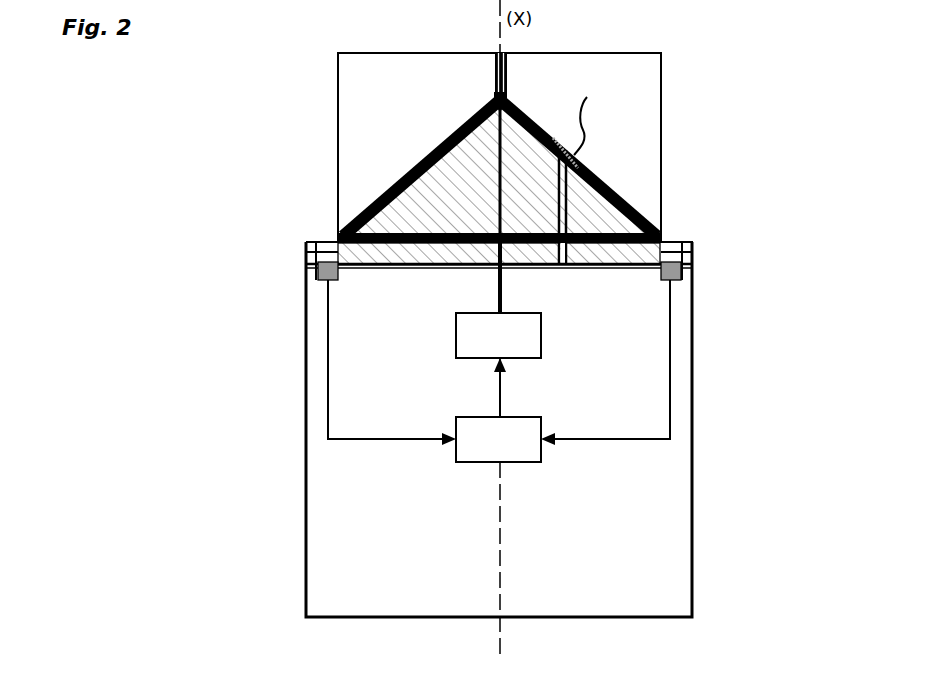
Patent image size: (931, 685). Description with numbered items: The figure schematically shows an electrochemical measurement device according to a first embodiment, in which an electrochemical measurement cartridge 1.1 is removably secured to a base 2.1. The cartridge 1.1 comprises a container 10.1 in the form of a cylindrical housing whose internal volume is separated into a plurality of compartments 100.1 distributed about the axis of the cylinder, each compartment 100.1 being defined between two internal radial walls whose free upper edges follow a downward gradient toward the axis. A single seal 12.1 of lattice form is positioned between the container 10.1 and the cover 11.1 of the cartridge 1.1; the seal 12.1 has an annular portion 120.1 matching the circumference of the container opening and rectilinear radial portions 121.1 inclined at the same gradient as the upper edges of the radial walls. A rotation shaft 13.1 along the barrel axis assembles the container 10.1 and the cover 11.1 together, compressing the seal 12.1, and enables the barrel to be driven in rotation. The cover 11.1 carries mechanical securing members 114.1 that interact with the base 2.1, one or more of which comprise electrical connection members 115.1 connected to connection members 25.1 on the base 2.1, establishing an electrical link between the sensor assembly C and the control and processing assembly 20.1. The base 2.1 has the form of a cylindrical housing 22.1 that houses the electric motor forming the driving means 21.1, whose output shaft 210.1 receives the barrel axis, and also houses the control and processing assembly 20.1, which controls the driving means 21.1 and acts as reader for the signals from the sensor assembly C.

The electrochemical measurement cartridge 1.1 is at (680, 160).
The container 10.1 is at (661, 112).
The compartments 100.1 is at (355, 84).
The cover 11.1 is at (599, 214).
The seal 12.1 is at (486, 178).
The annular portion 120.1 is at (356, 222).
The radial portions 121.1 is at (382, 190).
The rotation shaft 13.1 is at (495, 67).
The mechanical securing members 114.1 is at (306, 268).
The electrical connection members 115.1 is at (693, 262).
The connection members 25.1 is at (695, 272).
The base 2.1 is at (718, 428).
The control and processing assembly 20.1 is at (499, 371).
The driving means 21.1 is at (498, 335).
The output shaft 210.1 is at (503, 293).
The cylindrical housing 22.1 is at (306, 368).
The sensor assembly C is at (574, 123).